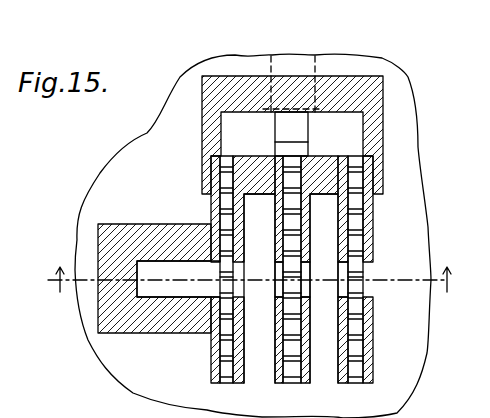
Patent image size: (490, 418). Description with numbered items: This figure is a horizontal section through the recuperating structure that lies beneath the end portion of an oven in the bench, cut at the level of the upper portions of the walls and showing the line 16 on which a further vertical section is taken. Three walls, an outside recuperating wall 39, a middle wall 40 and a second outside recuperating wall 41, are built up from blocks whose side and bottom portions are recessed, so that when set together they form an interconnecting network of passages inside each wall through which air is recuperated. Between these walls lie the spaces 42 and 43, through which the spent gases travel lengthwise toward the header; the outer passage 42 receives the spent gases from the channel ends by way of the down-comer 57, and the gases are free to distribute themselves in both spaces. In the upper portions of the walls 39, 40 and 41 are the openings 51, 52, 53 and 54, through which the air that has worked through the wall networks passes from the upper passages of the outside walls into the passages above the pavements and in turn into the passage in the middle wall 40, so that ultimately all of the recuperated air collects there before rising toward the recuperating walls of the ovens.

The section line 16— 16 is at (255, 279).
The recuperating wall 39 is at (227, 377).
The middle wall 40 is at (290, 370).
The recuperating wall 41 is at (352, 363).
The space 42 is at (257, 365).
The space 43 is at (321, 358).
The opening 51 is at (210, 333).
The opening 52 is at (277, 288).
The opening 53 is at (305, 288).
The opening 54 is at (342, 285).
The down-comer 57 is at (160, 279).